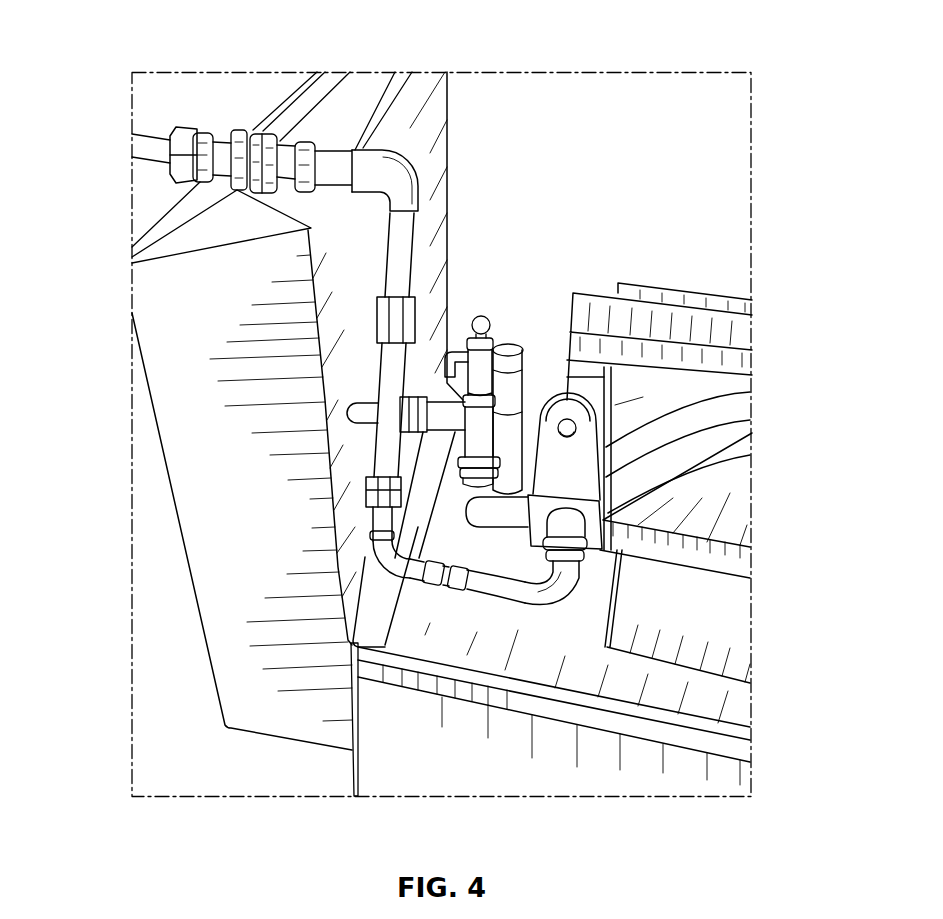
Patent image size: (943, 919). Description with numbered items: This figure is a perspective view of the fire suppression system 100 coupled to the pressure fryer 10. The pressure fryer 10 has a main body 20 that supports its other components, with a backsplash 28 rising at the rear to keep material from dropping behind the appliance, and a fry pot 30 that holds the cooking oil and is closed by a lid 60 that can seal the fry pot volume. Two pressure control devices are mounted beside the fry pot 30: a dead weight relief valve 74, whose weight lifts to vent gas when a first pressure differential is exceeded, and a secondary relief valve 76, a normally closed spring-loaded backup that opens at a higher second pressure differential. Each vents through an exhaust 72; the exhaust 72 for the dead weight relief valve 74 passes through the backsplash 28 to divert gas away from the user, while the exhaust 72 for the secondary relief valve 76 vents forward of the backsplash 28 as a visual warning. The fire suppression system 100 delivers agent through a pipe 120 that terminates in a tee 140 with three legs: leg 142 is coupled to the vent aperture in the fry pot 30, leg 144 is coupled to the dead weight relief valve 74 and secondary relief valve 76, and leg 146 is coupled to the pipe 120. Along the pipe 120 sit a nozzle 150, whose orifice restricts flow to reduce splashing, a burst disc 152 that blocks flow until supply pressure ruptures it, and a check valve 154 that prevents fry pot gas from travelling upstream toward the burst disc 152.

The pressure fryer 10 is at (740, 92).
The main body 20 is at (590, 783).
The backsplash 28 is at (444, 142).
The fry pot 30 is at (735, 612).
The lid 60 is at (737, 517).
The exhaust 72 is at (456, 351).
The dead weight relief valve 74 is at (510, 350).
The secondary relief valve 76 is at (484, 315).
The fire suppression system 100 is at (328, 143).
The pipe 120 is at (148, 132).
The tee 140 is at (751, 392).
The leg 142 is at (751, 421).
The leg 144 is at (543, 526).
The leg 146 is at (751, 456).
The nozzle 150 is at (380, 311).
The burst disc 152 is at (369, 492).
The check valve 154 is at (455, 596).